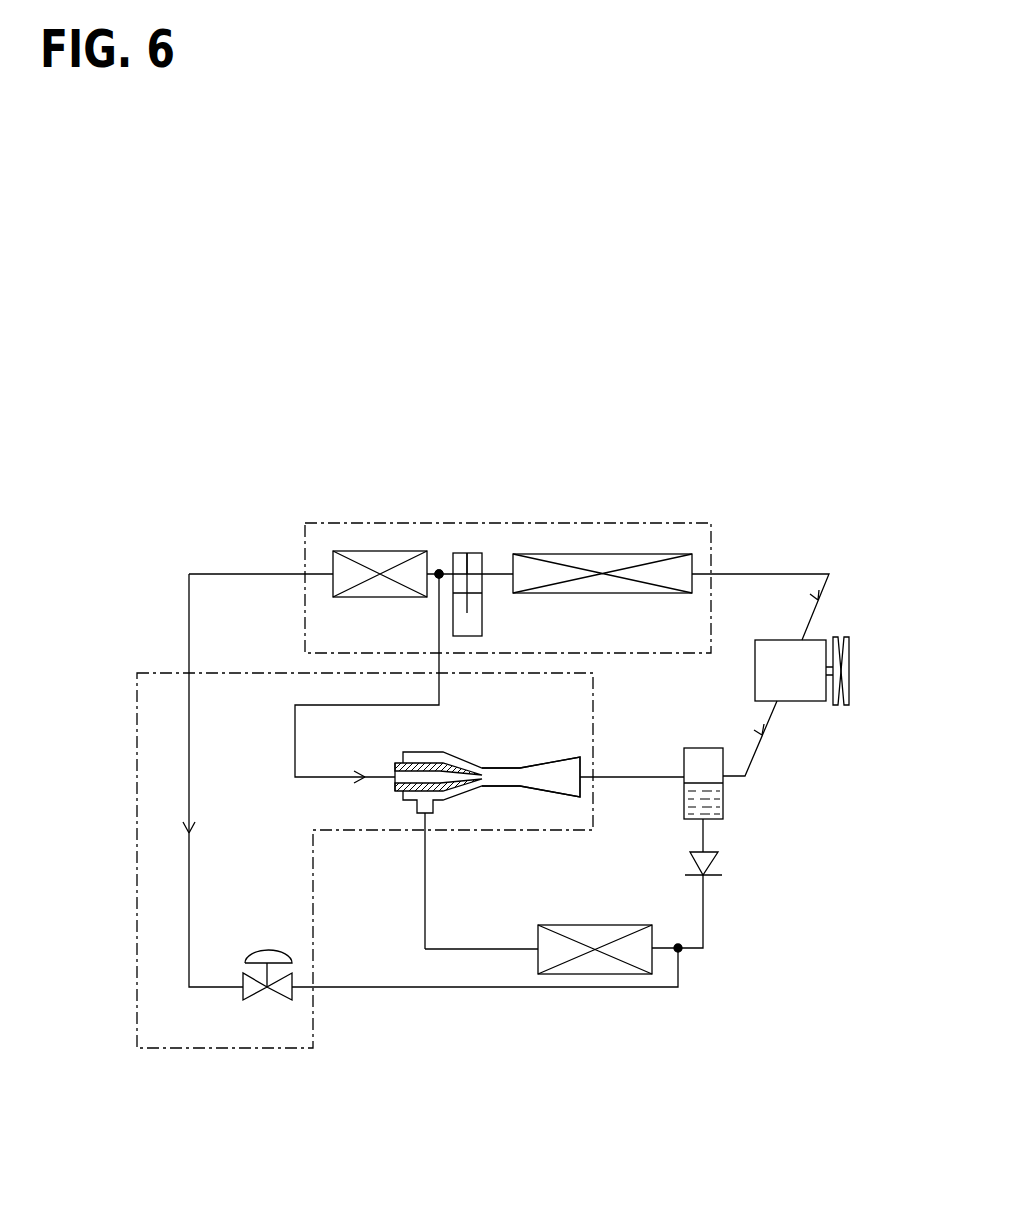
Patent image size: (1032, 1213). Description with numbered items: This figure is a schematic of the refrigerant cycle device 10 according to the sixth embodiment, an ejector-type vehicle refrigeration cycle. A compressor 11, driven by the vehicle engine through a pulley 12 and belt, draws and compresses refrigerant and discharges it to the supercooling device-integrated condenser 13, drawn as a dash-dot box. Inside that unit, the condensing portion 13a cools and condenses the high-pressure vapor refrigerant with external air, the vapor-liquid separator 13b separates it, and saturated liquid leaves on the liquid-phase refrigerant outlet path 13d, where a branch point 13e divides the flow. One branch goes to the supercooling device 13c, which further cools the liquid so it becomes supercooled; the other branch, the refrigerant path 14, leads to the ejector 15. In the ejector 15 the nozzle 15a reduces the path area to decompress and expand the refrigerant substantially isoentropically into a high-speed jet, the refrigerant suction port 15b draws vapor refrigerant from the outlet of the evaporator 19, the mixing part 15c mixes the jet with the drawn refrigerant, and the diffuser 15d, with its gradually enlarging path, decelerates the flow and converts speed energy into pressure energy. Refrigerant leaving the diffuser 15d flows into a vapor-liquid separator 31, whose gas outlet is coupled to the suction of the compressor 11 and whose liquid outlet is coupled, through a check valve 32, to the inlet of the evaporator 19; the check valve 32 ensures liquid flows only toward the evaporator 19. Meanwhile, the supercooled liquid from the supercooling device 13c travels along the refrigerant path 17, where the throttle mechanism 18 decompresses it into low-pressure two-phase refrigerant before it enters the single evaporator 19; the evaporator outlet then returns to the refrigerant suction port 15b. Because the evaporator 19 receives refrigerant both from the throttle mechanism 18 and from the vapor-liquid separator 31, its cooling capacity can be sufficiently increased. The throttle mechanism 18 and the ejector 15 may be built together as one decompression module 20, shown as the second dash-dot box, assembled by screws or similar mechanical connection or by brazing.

The refrigerant cycle device 10 is at (768, 574).
The compressor 11 is at (815, 640).
The pulley 12 is at (849, 670).
The supercooling device-integrated condenser 13 is at (670, 523).
The condensing portion 13a is at (607, 554).
The vapor-liquid separator 13b is at (475, 553).
The supercooling device 13c is at (378, 551).
The liquid-phase refrigerant outlet path 13d is at (458, 553).
The branch point 13e is at (440, 566).
The refrigerant path 14 is at (340, 706).
The ejector 15 is at (539, 816).
The nozzle 15a is at (464, 762).
The refrigerant suction port 15b is at (437, 807).
The mixing part 15c is at (498, 777).
The diffuser 15d is at (557, 782).
The refrigerant path 17 is at (189, 632).
The throttle mechanism 18 is at (258, 1000).
The evaporator 19 is at (612, 925).
The decompression module 20 is at (137, 897).
The vapor-liquid separator 31 is at (684, 762).
The check valve 32 is at (715, 862).